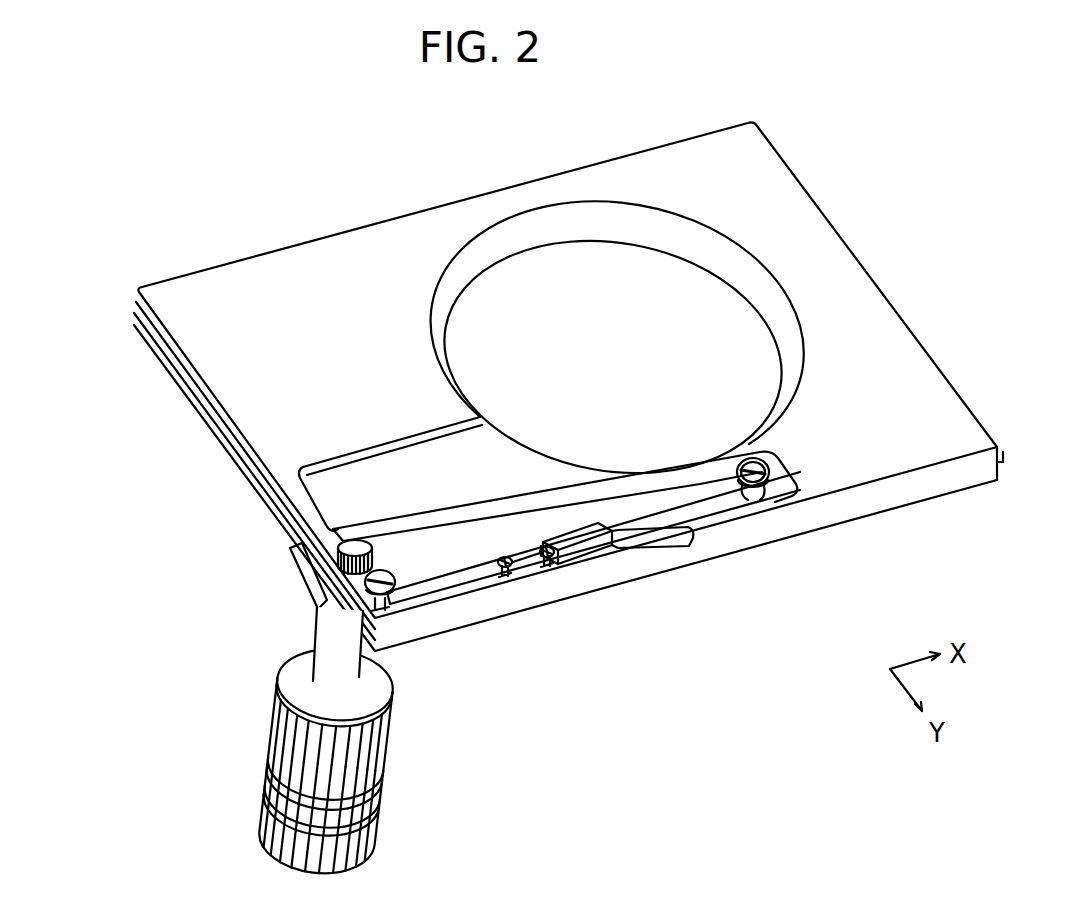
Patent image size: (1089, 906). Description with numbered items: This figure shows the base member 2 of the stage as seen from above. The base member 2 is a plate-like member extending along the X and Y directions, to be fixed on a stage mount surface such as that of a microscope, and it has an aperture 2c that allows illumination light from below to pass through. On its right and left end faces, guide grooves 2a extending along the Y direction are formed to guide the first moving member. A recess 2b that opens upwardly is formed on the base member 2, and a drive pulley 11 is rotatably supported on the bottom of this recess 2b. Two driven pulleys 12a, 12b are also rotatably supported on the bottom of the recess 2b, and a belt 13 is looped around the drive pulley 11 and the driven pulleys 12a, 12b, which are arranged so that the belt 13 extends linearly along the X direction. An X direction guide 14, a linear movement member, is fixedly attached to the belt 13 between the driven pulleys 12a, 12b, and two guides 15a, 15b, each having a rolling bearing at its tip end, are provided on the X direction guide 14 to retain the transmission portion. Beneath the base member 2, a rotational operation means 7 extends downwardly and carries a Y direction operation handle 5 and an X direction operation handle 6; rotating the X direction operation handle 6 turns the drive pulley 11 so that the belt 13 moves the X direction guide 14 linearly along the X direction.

The base member 2 is at (581, 421).
The guide grooves 2a is at (133, 312).
The recess 2b is at (343, 497).
The aperture 2c is at (503, 283).
The Y direction operation handle 5 is at (301, 703).
The X direction operation handle 6 is at (283, 814).
The rotational operation means 7 is at (320, 608).
The drive pulley 11 is at (350, 550).
The driven pulley 12a is at (776, 502).
The driven pulley 12b is at (384, 600).
The belt 13 is at (657, 520).
The X direction guide 14 is at (592, 548).
The guide 15a is at (506, 575).
The guide 15b is at (565, 572).